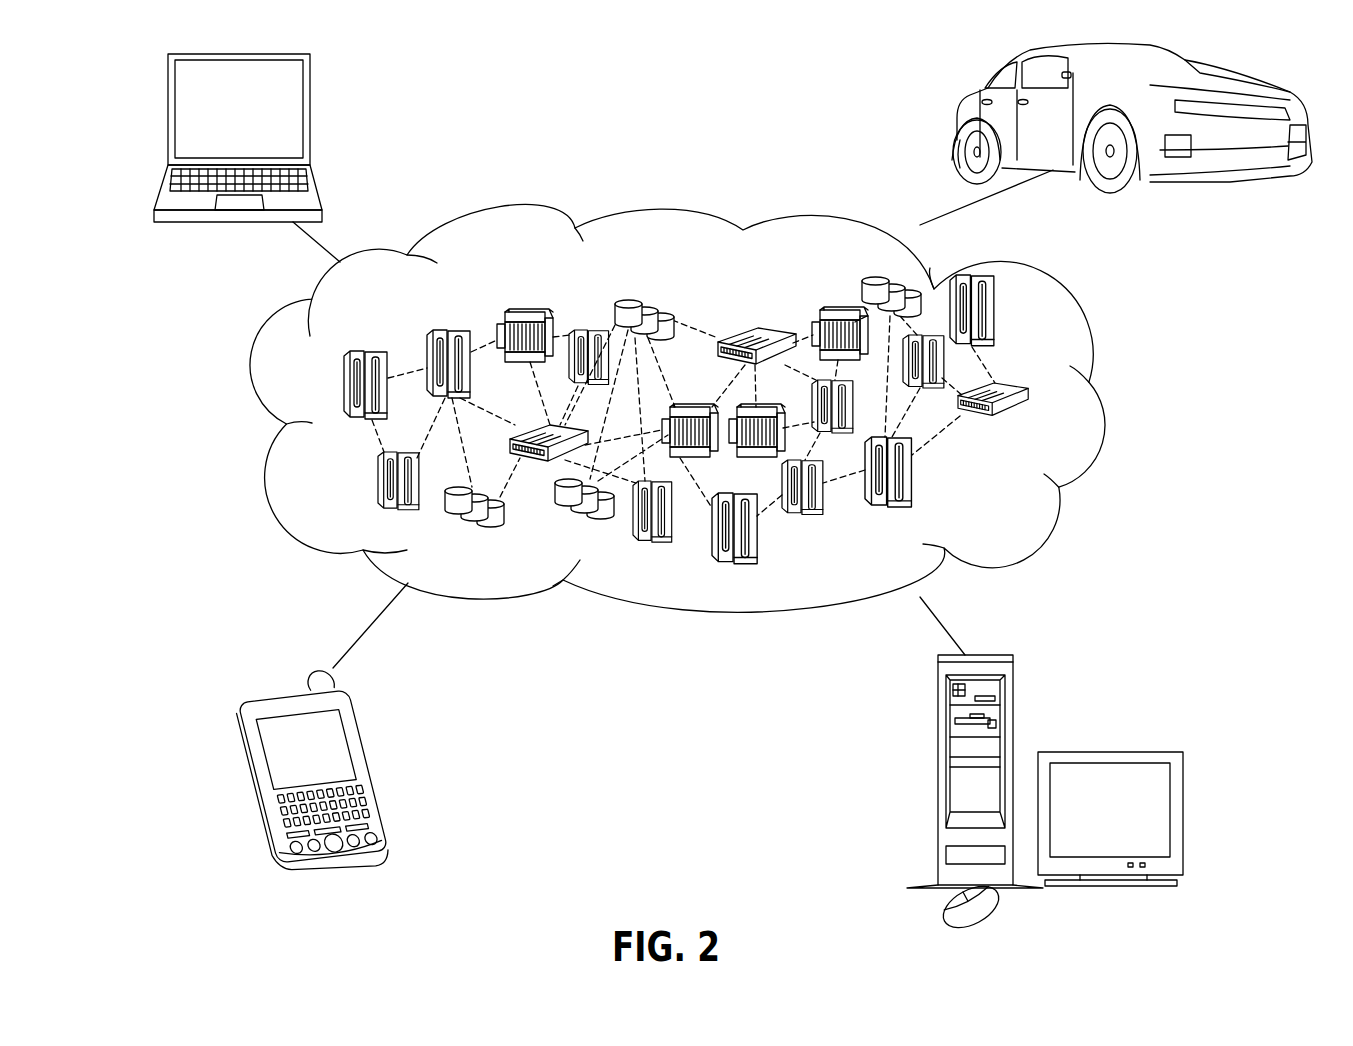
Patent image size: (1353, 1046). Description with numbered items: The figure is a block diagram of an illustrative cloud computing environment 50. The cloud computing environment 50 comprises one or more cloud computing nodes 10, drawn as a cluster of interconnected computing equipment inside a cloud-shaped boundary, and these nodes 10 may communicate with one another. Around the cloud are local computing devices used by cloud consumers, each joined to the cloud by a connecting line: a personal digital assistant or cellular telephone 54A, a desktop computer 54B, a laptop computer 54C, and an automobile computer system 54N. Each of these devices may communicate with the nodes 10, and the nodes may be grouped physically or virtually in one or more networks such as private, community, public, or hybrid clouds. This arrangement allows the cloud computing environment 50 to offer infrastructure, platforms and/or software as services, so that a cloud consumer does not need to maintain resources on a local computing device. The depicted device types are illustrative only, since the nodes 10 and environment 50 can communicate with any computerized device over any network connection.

The cloud computing nodes 10 is at (1012, 500).
The cloud computing environment 50 is at (1120, 399).
The personal digital assistant (PDA) or cellular telephone 54A is at (363, 732).
The desktop computer 54B is at (937, 715).
The laptop computer 54C is at (312, 92).
The automobile computer system 54N is at (955, 108).